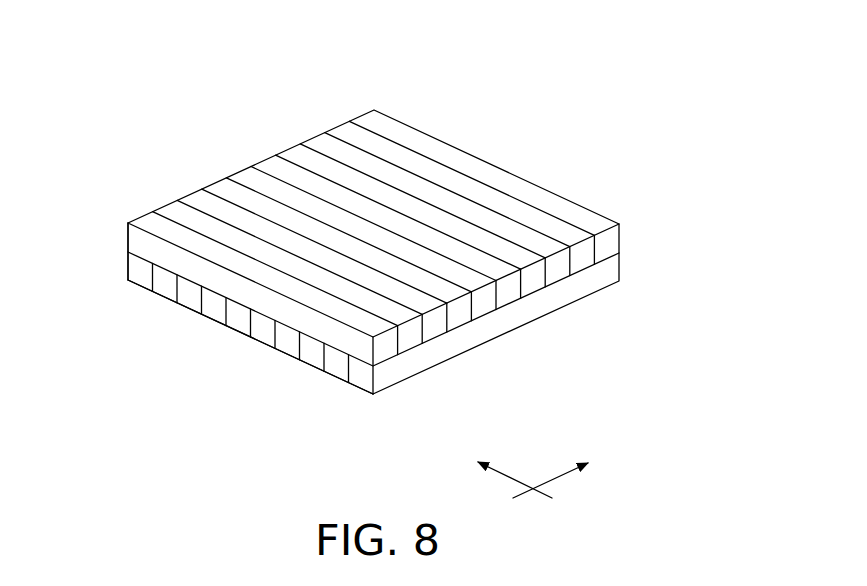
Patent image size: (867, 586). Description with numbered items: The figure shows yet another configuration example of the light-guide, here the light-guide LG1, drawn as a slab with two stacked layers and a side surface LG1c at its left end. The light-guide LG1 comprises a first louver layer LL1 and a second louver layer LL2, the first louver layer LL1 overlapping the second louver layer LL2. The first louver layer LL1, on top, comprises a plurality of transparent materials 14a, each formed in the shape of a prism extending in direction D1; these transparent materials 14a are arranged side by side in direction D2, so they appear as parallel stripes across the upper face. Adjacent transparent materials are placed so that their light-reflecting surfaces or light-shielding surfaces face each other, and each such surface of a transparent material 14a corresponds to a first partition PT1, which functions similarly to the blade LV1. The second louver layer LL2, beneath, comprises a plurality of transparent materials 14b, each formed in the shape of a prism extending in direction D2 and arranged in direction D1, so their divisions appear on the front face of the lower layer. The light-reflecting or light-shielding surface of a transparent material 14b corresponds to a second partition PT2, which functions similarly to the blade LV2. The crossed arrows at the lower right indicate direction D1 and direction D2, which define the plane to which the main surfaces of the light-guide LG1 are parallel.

The light-guide LG1 is at (377, 229).
The side surface LG1c is at (137, 284).
The first louver layer LL1 is at (422, 269).
The second louver layer LL2 is at (422, 340).
The transparent material 14a is at (374, 269).
The transparent material 14b is at (250, 346).
The first partition PT1 is at (496, 330).
The blade LV1 is at (428, 330).
The second partition PT2 is at (250, 337).
The blade LV2 is at (223, 313).
The direction D1 is at (499, 475).
The direction D2 is at (567, 475).